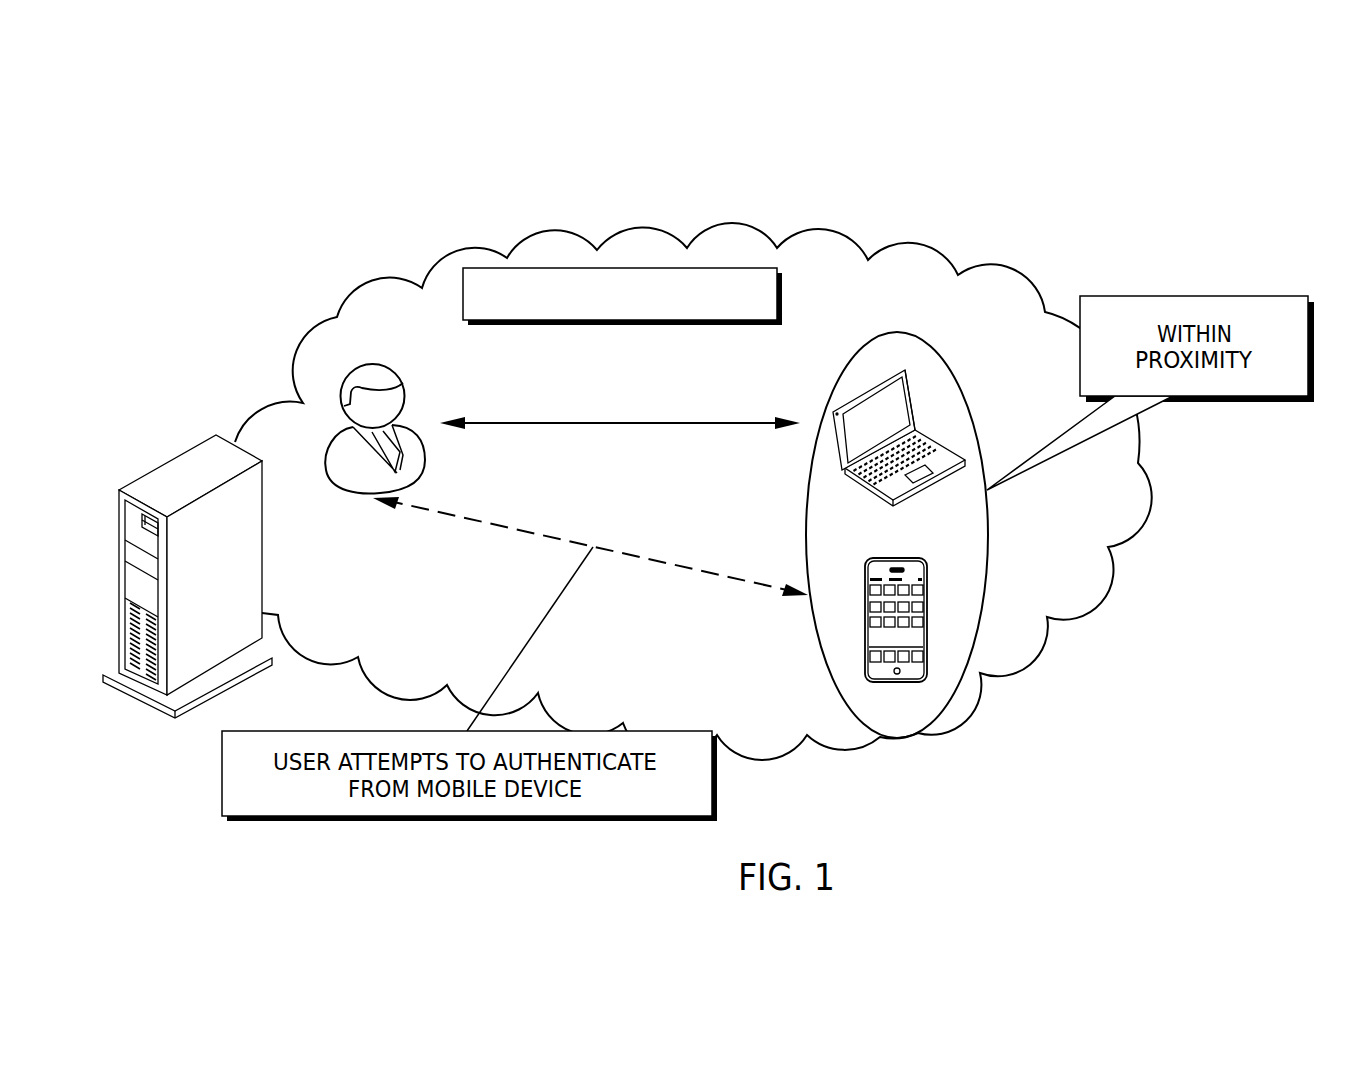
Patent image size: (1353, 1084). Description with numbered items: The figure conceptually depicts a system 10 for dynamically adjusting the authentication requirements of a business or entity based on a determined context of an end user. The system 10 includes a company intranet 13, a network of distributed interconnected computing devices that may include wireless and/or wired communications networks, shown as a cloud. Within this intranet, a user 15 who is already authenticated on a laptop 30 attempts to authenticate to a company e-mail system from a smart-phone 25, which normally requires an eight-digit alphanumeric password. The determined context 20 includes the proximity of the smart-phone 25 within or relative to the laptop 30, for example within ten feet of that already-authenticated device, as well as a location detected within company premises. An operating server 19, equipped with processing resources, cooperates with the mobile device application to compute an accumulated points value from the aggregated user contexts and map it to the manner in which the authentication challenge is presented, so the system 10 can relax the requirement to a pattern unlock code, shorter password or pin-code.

The system 10 is at (264, 247).
The company intranet 13 is at (915, 233).
The user 15 is at (353, 368).
The operating server 19 is at (142, 475).
The determined context 20 is at (918, 735).
The smart-phone 25 is at (862, 637).
The laptop 30 is at (900, 396).